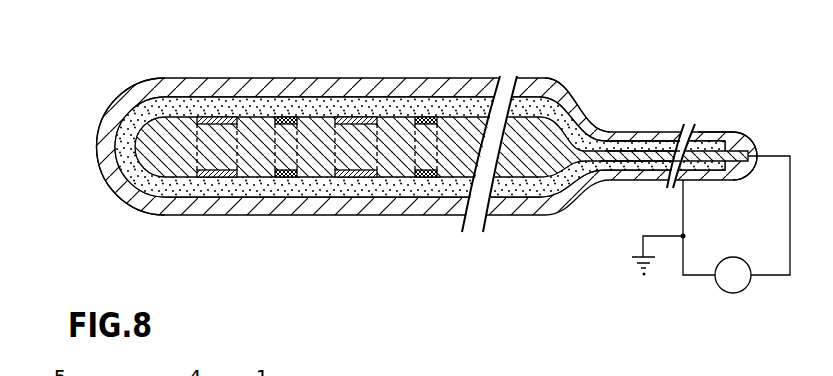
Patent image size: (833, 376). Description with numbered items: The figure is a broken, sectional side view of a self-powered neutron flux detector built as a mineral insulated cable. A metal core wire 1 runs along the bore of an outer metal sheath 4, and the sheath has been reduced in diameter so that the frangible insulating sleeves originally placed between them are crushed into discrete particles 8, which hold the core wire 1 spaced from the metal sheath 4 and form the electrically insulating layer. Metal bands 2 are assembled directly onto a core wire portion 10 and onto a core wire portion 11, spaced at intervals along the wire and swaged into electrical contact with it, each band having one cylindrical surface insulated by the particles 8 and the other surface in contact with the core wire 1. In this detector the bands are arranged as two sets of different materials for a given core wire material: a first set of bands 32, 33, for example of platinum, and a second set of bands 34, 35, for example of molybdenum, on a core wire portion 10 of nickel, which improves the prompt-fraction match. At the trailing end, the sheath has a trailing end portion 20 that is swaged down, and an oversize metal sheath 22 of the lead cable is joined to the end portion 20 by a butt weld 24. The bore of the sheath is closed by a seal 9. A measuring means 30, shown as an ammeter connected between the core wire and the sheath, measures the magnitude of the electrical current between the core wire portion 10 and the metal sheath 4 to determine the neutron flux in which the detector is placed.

The core wire 1 is at (320, 130).
The metal bands 2 is at (277, 118).
The outer metal sheath 4 is at (386, 90).
The discrete particles 8 is at (430, 110).
The seal 9 is at (748, 147).
The core wire portion 10 is at (163, 137).
The core wire portion 11 is at (643, 160).
The trailing end portion 20 is at (572, 100).
The oversize metal sheath 22 is at (698, 137).
The butt weld 24 is at (612, 137).
The current measuring means 30 is at (627, 145).
The first set band 32 is at (207, 176).
The first set band 33 is at (360, 176).
The second set band 34 is at (282, 176).
The second set band 35 is at (423, 176).